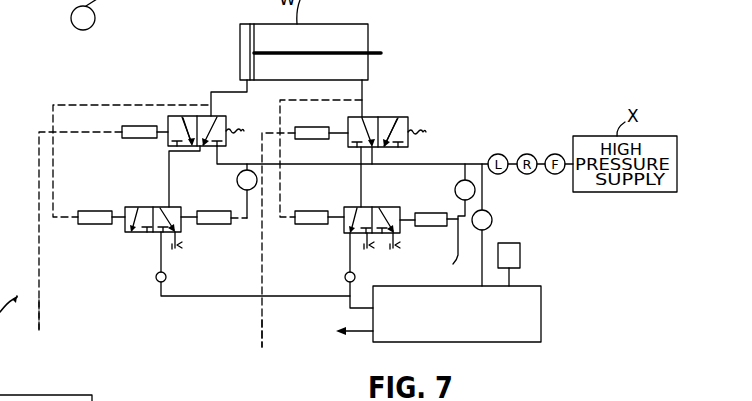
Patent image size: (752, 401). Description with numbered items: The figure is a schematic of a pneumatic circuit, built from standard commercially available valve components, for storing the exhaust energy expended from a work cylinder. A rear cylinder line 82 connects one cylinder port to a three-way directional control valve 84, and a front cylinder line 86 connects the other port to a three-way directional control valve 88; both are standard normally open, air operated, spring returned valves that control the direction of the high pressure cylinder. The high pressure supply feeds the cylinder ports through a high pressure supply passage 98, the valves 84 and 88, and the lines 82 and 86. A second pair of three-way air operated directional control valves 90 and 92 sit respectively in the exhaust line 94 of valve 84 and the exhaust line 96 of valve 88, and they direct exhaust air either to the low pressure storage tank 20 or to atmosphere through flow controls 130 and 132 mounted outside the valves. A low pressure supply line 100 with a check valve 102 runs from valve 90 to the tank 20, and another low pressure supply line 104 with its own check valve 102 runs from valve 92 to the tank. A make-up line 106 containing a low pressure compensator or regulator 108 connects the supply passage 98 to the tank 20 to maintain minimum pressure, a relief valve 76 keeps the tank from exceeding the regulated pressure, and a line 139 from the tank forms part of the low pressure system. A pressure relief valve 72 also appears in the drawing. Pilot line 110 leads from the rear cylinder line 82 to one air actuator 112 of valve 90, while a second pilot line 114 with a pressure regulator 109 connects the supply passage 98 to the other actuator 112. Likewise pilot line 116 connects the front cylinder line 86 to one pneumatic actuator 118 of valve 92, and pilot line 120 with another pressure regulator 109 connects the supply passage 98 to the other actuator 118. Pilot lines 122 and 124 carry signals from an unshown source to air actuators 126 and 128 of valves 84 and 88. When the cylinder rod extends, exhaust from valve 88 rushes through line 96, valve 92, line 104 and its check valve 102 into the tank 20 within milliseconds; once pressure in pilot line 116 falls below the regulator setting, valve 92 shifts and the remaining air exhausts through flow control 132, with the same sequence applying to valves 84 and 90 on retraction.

The low pressure storage tank 20 is at (541, 331).
The pressure relief valve 72 is at (96, 21).
The pressure relief valve 76 is at (521, 265).
The rear cylinder line 82 is at (228, 91).
The three-way directional control valve 84 is at (181, 128).
The front cylinder line 86 is at (364, 97).
The three-way directional control valve 88 is at (408, 118).
The three-way air operated directional control valve 90 is at (153, 232).
The three-way air operated directional control valve 92 is at (390, 206).
The exhaust line 94 is at (168, 175).
The exhaust line 96 is at (359, 182).
The high pressure supply passage 98 is at (424, 164).
The low pressure supply line 100 is at (197, 297).
The check valve 102 is at (157, 273).
The low pressure supply line 104 is at (348, 249).
The make-up line 106 is at (484, 200).
The low pressure compensator or regulator 108 is at (492, 223).
The pressure regulator 109 is at (257, 184).
The pilot line 110 is at (110, 104).
The air actuator 112 is at (93, 227).
The second pilot line 114 is at (238, 187).
The pilot line 116 is at (333, 100).
The pneumatic actuator 118 is at (313, 226).
The pilot line 120 is at (448, 240).
The pilot line 122 is at (39, 330).
The pilot line 124 is at (262, 343).
The air actuator 126 is at (133, 140).
The air actuator 128 is at (305, 237).
The flow control 130 is at (178, 253).
The flow control 132 is at (395, 252).
The line 139 is at (360, 333).